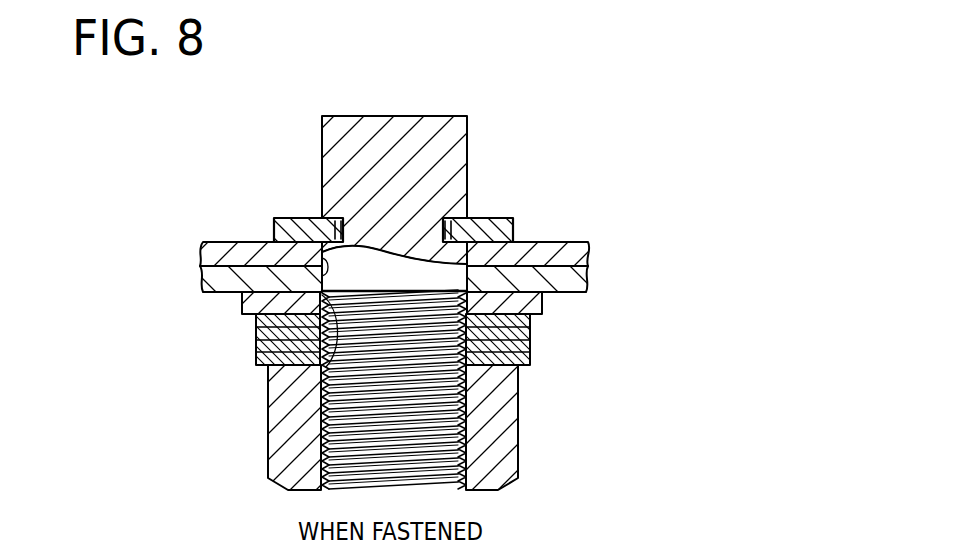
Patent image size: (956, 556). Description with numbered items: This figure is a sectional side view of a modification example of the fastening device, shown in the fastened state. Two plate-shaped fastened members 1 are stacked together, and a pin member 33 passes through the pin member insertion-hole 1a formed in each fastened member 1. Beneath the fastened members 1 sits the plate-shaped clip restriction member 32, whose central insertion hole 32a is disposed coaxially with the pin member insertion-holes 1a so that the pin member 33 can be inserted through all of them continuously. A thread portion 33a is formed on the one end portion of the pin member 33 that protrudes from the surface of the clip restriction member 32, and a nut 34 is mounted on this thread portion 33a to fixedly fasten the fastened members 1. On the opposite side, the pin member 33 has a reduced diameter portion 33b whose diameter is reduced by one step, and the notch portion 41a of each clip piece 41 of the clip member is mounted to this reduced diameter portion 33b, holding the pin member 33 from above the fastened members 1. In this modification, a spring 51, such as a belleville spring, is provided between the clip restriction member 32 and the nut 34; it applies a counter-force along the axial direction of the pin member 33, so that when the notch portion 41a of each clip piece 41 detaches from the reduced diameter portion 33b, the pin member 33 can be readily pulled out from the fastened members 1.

The fastened member 1 is at (212, 253).
The pin member insertion-hole 1a is at (320, 266).
The clip restriction member 32 is at (236, 301).
The insertion hole 32a is at (326, 384).
The pin member 33 is at (350, 114).
The thread portion 33a is at (328, 427).
The reduced diameter portion 33b is at (350, 243).
The nut 34 is at (293, 484).
The clip piece 41 is at (312, 226).
The notch portion 41a is at (336, 238).
The spring 51 is at (250, 344).